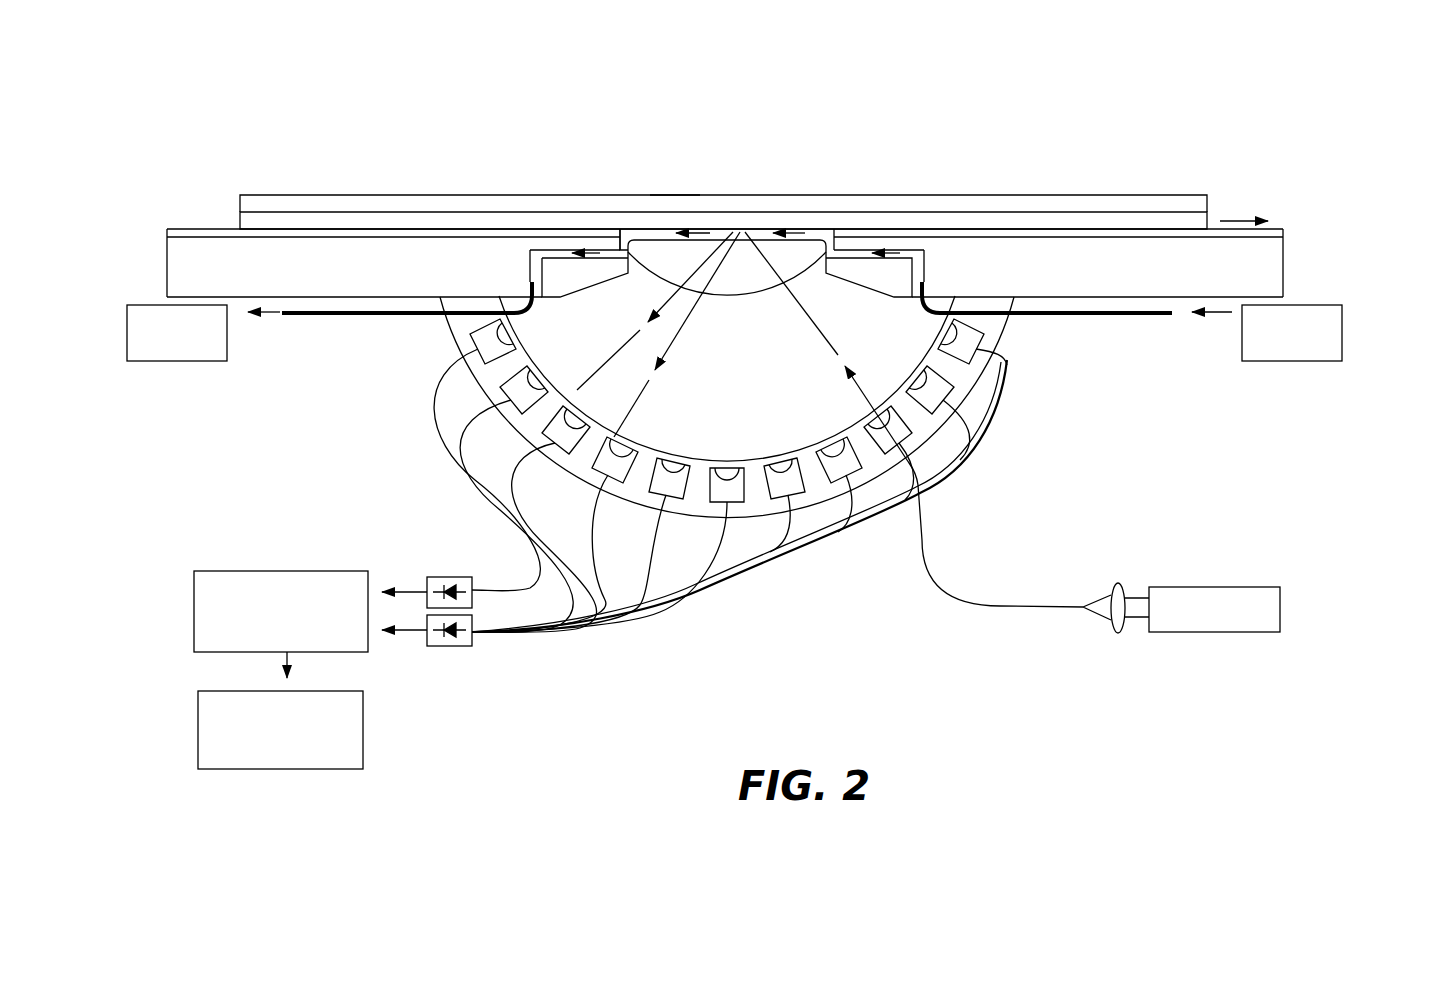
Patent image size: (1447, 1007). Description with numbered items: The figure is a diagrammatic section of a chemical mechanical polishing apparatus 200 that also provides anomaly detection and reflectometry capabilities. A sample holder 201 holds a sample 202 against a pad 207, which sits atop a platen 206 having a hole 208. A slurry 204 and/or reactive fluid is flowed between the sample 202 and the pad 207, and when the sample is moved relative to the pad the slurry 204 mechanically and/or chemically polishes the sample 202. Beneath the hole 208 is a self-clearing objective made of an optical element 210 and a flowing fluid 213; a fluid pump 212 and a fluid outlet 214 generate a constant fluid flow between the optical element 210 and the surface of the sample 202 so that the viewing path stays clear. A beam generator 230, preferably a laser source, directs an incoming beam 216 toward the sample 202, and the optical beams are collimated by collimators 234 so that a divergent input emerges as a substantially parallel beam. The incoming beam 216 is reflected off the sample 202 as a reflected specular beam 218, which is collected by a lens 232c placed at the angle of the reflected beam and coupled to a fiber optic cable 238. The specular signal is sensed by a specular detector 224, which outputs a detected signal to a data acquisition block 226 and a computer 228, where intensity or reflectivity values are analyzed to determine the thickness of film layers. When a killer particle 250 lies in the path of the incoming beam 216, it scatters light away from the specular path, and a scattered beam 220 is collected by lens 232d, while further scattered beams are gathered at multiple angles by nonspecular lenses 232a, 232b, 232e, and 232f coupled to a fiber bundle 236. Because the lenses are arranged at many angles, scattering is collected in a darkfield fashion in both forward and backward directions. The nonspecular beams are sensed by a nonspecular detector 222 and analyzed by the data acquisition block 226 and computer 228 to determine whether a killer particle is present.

The chemical mechanical polishing apparatus 200 is at (1300, 125).
The sample holder 201 is at (1125, 195).
The sample 202 is at (275, 195).
The slurry 204 is at (1287, 232).
The platen 206 is at (1284, 280).
The pad 207 is at (1287, 238).
The hole 208 is at (878, 85).
The optical element 210 is at (637, 244).
The fluid pump 212 is at (1283, 361).
The flowing fluid 213 is at (672, 195).
The fluid outlet 214 is at (150, 361).
The incoming beam 216 is at (868, 380).
The reflected specular beam 218 is at (612, 378).
The scattered beam 220 is at (692, 365).
The nonspecular detector 222 is at (447, 647).
The specular detector 224 is at (450, 577).
The data acquisition block 226 is at (248, 568).
The computer 228 is at (290, 772).
The beam generator 230 is at (1208, 634).
The nonspecular lens 232a is at (445, 340).
The nonspecular lens 232b is at (452, 394).
The lens 232c is at (482, 440).
The lens 232d is at (645, 455).
The nonspecular lens 232e is at (985, 336).
The nonspecular lens 232f is at (985, 385).
The collimator 234 is at (980, 445).
The fiber bundle 236 is at (718, 597).
The fiber optic cable 238 is at (520, 585).
The killer particle 250 is at (762, 228).